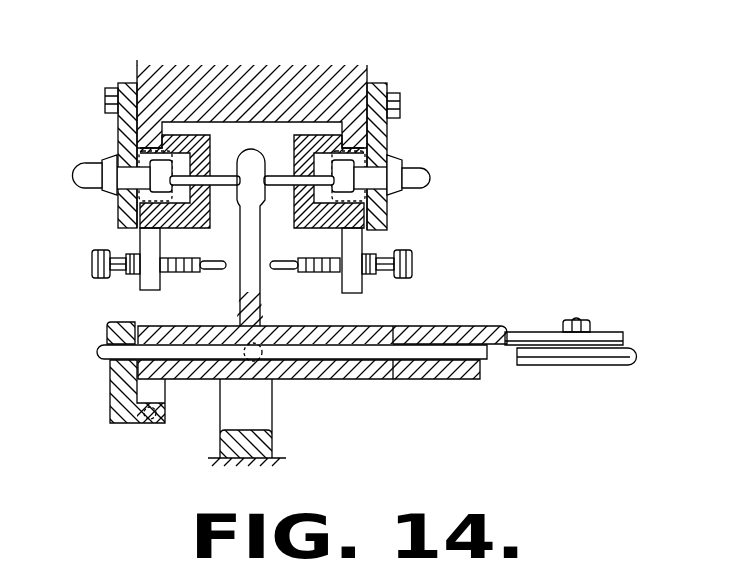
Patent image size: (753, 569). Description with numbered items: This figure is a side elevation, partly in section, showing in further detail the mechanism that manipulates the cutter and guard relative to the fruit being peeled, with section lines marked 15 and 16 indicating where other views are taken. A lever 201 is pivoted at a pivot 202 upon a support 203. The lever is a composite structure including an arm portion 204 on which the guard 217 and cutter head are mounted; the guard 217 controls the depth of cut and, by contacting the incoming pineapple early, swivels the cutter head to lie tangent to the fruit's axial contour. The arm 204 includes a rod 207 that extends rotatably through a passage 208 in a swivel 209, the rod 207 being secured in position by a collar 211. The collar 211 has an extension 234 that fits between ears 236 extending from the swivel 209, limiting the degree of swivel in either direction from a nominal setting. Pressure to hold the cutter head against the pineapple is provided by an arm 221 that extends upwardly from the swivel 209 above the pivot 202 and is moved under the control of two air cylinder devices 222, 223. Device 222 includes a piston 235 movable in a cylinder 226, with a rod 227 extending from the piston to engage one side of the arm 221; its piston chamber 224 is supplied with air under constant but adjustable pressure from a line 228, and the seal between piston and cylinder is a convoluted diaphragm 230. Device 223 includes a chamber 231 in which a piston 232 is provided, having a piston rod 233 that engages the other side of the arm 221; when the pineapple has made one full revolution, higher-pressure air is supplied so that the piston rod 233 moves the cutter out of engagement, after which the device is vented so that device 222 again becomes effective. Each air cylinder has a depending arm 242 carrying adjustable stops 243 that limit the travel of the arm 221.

The lever 201 is at (546, 320).
The pivot 202 is at (278, 380).
The support 203 is at (272, 446).
The arm portion 204 is at (618, 335).
The rod 207 is at (97, 352).
The passage 208 is at (385, 381).
The swivel 209 is at (368, 381).
The collar 211 is at (107, 326).
The guard 217 is at (615, 366).
The arm 221 is at (252, 160).
The air cylinder device 222 is at (159, 117).
The air cylinder device 223 is at (386, 233).
The piston chamber 224 is at (118, 206).
The cylinder 226 is at (183, 157).
The rod 227 is at (224, 186).
The line 228 is at (86, 178).
The convoluted diaphragm 230 is at (142, 162).
The chamber 231 is at (342, 186).
The piston 232 is at (352, 182).
The piston rod 233 is at (283, 186).
The extension 234 is at (118, 424).
The piston 235 is at (157, 170).
The ears 236 is at (422, 176).
The depending arm 242 is at (145, 290).
The adjustable stops 243 is at (212, 277).
The section line 15- 15 is at (229, 33).
The section line 16- 16 is at (63, 277).